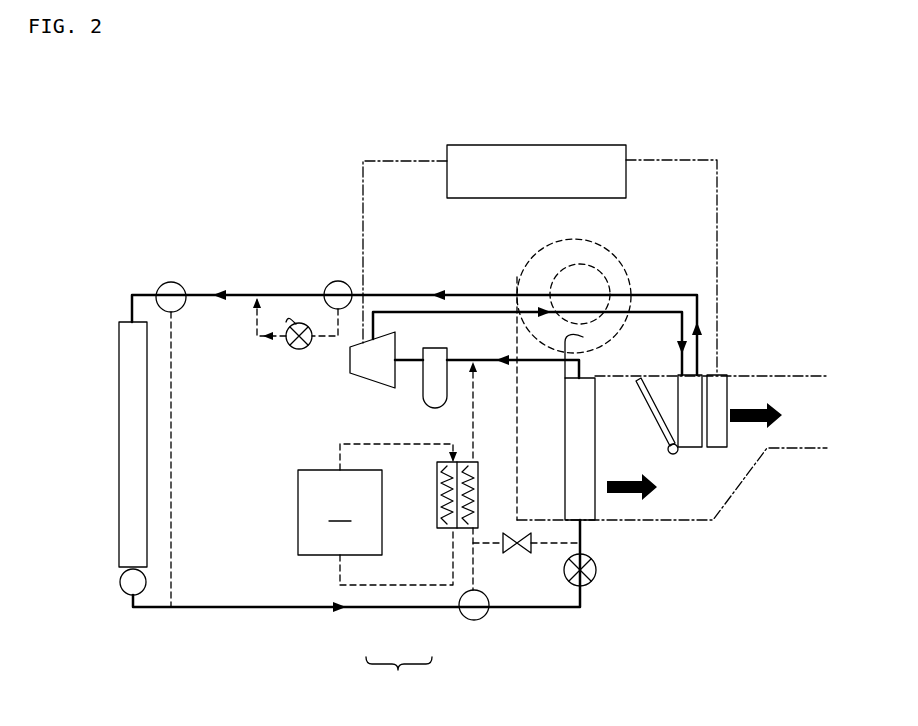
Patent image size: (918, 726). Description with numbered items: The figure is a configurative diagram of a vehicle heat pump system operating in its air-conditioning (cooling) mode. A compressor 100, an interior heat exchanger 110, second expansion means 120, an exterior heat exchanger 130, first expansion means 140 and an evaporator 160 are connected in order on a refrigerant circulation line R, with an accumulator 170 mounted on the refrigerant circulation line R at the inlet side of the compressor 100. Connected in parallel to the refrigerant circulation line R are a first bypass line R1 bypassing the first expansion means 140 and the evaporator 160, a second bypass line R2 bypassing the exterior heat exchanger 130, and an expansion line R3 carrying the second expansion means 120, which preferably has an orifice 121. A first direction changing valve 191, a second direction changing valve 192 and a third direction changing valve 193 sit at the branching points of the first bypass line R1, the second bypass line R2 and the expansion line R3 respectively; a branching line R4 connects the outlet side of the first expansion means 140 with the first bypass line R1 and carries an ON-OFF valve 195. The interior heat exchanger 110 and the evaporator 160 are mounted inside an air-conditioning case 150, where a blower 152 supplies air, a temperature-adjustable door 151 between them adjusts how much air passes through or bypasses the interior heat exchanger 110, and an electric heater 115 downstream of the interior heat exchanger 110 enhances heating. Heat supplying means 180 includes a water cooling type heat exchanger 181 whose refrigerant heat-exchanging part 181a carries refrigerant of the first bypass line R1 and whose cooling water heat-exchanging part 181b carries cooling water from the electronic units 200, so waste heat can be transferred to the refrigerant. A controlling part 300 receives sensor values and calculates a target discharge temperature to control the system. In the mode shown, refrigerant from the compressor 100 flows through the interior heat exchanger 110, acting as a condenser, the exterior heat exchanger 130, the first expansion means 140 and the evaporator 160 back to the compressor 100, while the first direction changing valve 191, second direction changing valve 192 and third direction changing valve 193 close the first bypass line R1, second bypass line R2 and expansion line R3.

The compressor 100 is at (350, 360).
The interior heat exchanger 110 is at (697, 447).
The electric heater 115 is at (713, 447).
The second expansion means 120 is at (289, 351).
The orifice 121 is at (296, 324).
The exterior heat exchanger 130 is at (119, 446).
The first expansion means 140 is at (597, 570).
The air-conditioning case 150 is at (767, 448).
The temperature-adjustable door 151 is at (660, 404).
The blower 152 is at (610, 278).
The evaporator 160 is at (596, 508).
The accumulator 170 is at (437, 348).
The heat supplying means 180 is at (412, 576).
The water cooling type heat exchanger 181 is at (399, 673).
The refrigerant heat-exchanging part 181a is at (467, 530).
The cooling water heat-exchanging part 181b is at (455, 530).
The first direction changing valve 191 is at (474, 621).
The second direction changing valve 192 is at (171, 282).
The third direction changing valve 193 is at (338, 281).
The ON-OFF valve 195 is at (518, 554).
The electronic units 200 is at (377, 514).
The controlling part 300 is at (535, 145).
The refrigerant circulation line R is at (458, 288).
The first bypass line R1 is at (473, 562).
The second bypass line R2 is at (172, 582).
The expansion line R3 is at (338, 323).
The branching line R4 is at (557, 545).